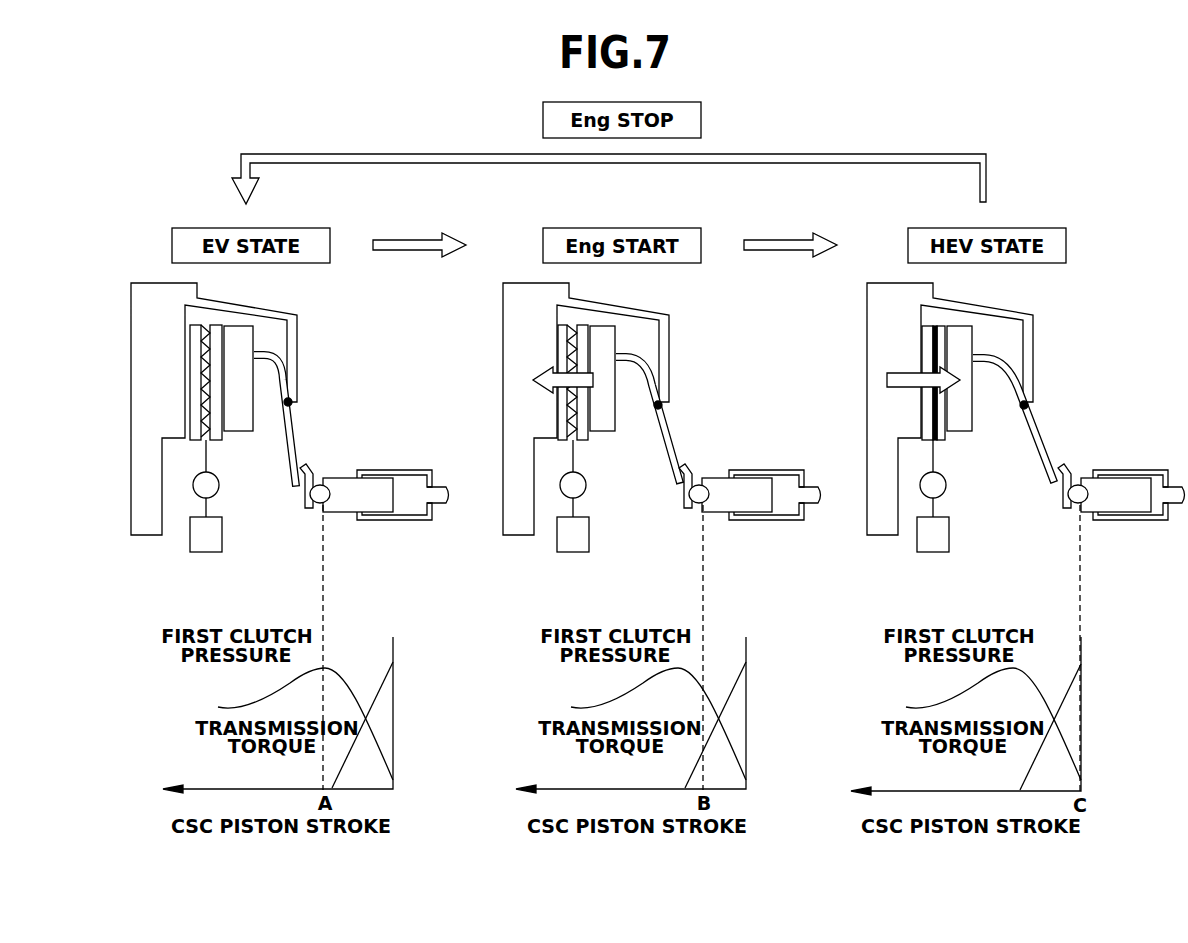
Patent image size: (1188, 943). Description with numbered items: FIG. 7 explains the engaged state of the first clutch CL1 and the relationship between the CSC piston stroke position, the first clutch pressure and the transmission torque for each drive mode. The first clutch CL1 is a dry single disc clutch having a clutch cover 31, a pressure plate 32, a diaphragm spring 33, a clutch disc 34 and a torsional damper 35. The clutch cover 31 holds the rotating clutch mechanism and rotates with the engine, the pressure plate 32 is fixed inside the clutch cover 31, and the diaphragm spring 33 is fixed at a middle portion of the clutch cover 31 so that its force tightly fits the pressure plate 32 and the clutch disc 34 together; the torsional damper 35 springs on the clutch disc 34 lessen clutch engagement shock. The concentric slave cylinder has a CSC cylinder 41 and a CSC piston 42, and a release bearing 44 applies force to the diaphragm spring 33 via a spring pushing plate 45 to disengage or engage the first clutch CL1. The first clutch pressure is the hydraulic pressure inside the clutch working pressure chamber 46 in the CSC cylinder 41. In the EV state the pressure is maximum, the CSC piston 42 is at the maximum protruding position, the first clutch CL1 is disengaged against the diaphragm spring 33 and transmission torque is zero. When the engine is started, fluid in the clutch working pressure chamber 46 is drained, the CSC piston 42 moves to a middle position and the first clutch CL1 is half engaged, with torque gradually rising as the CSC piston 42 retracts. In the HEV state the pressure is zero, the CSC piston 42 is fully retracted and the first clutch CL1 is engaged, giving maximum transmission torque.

The clutch cover 31 is at (148, 323).
The pressure plate 32 is at (245, 338).
The diaphragm spring 33 is at (295, 428).
The clutch disc 34 is at (205, 324).
The torsional damper 35 is at (219, 484).
The CSC cylinder 41 is at (400, 472).
The CSC piston 42 is at (343, 502).
The release bearing 44 is at (317, 510).
The spring pushing plate 45 is at (308, 468).
The clutch working pressure chamber 46 is at (407, 507).
The first clutch CL1 is at (119, 490).